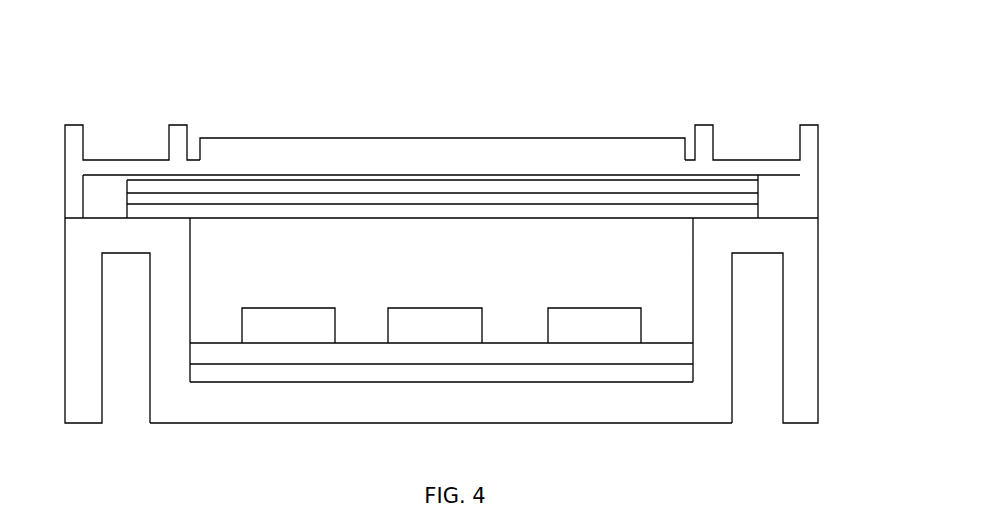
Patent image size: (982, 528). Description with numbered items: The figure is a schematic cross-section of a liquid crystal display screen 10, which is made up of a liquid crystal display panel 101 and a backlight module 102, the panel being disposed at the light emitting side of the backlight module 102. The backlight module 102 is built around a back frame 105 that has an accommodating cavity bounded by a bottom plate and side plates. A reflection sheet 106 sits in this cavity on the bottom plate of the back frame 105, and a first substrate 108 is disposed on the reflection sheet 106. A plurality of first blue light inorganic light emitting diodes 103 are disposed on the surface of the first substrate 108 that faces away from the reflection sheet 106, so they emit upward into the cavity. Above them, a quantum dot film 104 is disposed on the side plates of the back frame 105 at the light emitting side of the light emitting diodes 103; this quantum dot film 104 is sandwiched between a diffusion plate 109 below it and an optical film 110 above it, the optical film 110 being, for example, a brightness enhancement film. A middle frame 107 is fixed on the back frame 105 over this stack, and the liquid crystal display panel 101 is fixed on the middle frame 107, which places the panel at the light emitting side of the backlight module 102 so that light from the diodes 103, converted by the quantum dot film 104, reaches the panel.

The liquid crystal display screen 10 is at (453, 49).
The liquid crystal display panel 101 is at (432, 143).
The backlight module 102 is at (370, 397).
The first blue light inorganic light emitting diode 103 is at (285, 328).
The quantum dot film 104 is at (740, 198).
The back frame 105 is at (170, 328).
The reflection sheet 106 is at (462, 368).
The middle frame 107 is at (760, 163).
The first substrate 108 is at (563, 358).
The diffusion plate 109 is at (737, 212).
The optical film 110 is at (737, 185).